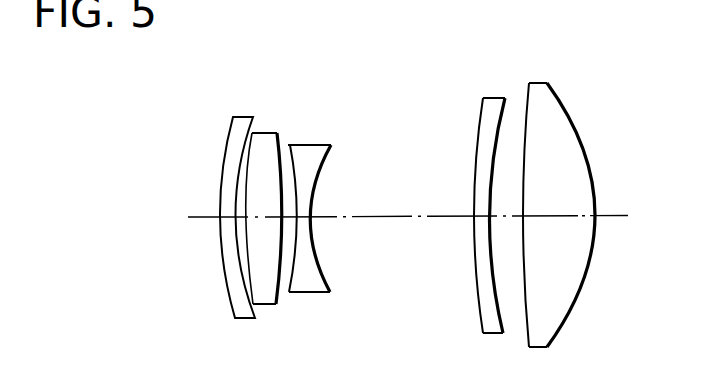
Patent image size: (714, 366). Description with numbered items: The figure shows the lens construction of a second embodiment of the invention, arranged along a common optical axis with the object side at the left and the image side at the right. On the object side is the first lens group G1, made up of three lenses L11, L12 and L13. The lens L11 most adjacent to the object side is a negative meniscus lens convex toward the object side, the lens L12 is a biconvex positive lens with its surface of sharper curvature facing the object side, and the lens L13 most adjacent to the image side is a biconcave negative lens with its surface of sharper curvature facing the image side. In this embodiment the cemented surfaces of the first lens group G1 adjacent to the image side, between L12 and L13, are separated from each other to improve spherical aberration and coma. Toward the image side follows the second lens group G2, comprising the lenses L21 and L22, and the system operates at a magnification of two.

The first lens group G1 is at (358, 40).
The second lens group G2 is at (567, 35).
The first lens of first group L11 is at (243, 116).
The second lens of first group L12 is at (267, 132).
The third lens of first group L13 is at (313, 144).
The first lens of second group L21 is at (494, 97).
The second lens of second group L22 is at (540, 83).